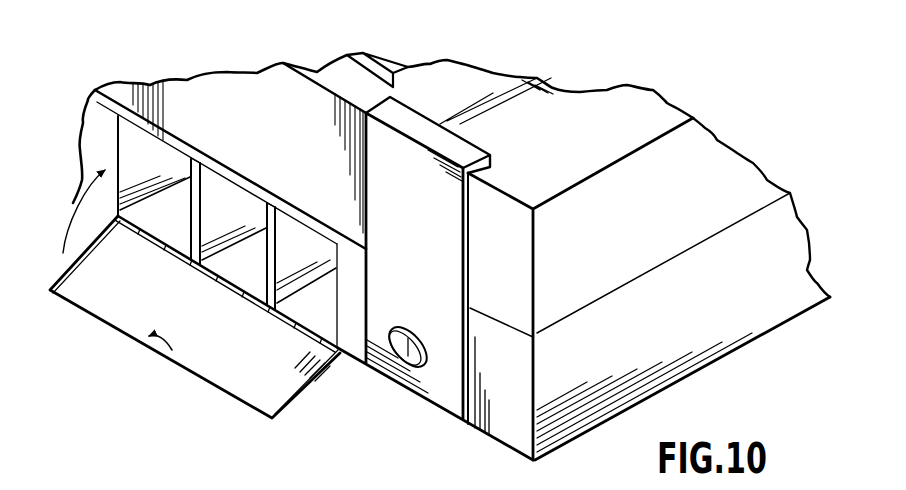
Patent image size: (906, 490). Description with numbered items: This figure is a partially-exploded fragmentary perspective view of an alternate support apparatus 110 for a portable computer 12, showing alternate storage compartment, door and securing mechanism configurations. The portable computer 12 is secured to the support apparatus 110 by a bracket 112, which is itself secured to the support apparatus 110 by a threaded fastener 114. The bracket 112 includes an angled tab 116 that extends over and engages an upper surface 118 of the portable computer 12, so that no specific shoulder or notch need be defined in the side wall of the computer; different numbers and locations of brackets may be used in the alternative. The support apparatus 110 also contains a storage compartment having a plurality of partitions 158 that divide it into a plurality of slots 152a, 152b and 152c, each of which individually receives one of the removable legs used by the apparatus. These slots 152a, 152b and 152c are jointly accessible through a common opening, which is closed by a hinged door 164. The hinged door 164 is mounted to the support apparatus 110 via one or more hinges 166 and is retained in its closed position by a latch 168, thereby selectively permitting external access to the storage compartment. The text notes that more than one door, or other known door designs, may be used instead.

The portable computer 12 is at (649, 289).
The support apparatus 110 is at (515, 412).
The bracket 112 is at (419, 264).
The threaded fastener 114 is at (402, 356).
The angled tab 116 is at (472, 146).
The upper surface 118 is at (610, 105).
The slot 152a is at (165, 216).
The slot 152b is at (238, 213).
The slot 152c is at (316, 307).
The partition 158 is at (191, 171).
The hinged door 164 is at (115, 305).
The hinge 166 is at (180, 257).
The latch 168 is at (155, 352).